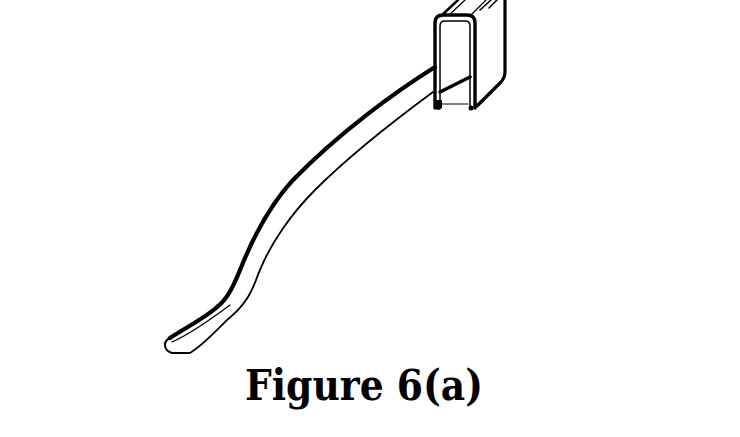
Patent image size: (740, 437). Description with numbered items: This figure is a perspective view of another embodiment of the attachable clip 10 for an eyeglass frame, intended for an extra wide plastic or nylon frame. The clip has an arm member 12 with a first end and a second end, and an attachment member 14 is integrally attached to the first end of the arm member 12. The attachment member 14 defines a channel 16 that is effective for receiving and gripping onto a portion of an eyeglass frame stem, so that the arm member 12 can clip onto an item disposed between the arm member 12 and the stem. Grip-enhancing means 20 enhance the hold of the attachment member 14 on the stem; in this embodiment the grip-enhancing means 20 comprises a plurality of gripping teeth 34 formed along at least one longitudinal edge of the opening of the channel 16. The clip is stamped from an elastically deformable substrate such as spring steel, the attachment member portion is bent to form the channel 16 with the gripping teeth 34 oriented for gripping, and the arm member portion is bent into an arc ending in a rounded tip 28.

The attachable clip 10 is at (272, 92).
The arm member 12 is at (270, 253).
The attachment member 14 is at (485, 40).
The channel 16 is at (457, 110).
The grip-enhancing means 20 is at (446, 112).
The rounded tip 28 is at (167, 340).
The gripping teeth 34 is at (474, 110).